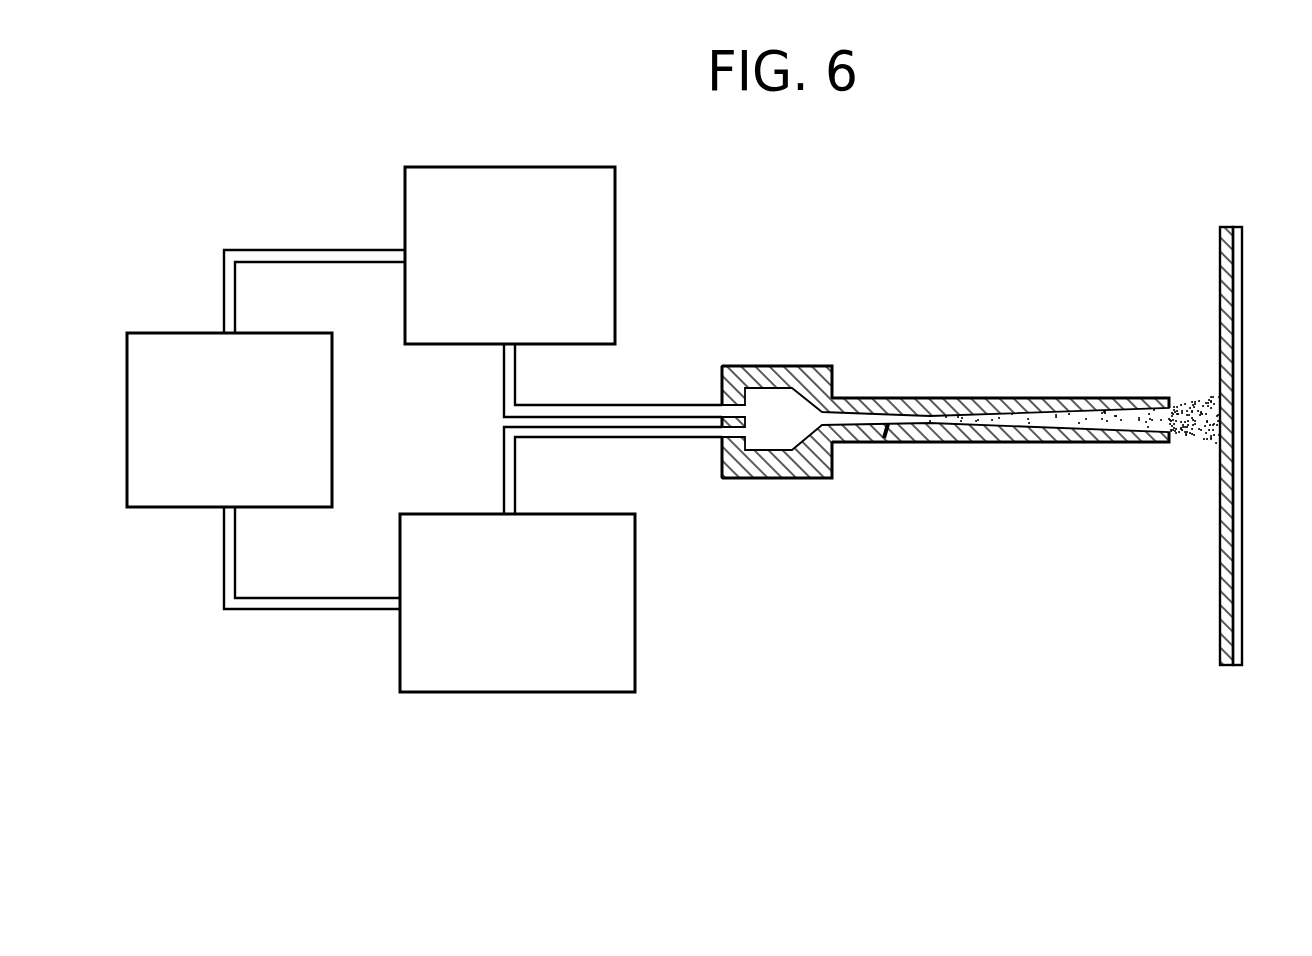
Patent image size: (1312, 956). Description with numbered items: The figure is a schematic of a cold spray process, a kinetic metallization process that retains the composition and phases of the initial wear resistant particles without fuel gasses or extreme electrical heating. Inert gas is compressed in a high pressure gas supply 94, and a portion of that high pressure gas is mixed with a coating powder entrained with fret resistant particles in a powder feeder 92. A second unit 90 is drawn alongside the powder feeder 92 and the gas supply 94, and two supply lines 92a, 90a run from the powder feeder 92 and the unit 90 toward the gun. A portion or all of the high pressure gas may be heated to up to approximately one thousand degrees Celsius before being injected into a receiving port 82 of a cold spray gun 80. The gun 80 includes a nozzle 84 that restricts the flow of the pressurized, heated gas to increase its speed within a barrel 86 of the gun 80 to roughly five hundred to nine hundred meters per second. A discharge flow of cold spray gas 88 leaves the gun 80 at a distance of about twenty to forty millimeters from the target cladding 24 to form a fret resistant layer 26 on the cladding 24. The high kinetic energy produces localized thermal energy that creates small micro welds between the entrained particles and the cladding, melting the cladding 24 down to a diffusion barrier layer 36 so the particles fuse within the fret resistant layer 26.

The cladding 24 is at (1211, 446).
The fret resistant layer 26 is at (1218, 508).
The diffusion barrier layer 36 is at (1233, 622).
The cold spray gun 80 is at (945, 415).
The receiving port 82 is at (770, 430).
The nozzle 84 is at (887, 424).
The barrel 86 is at (1040, 443).
The discharge flow of cold spray gas 88 is at (1190, 413).
The second fluid source 90 is at (635, 655).
The second fluid supply line 90a is at (632, 438).
The powder feeder 92 is at (615, 223).
The first fluid supply line 92a is at (630, 403).
The high pressure gas supply 94 is at (333, 438).